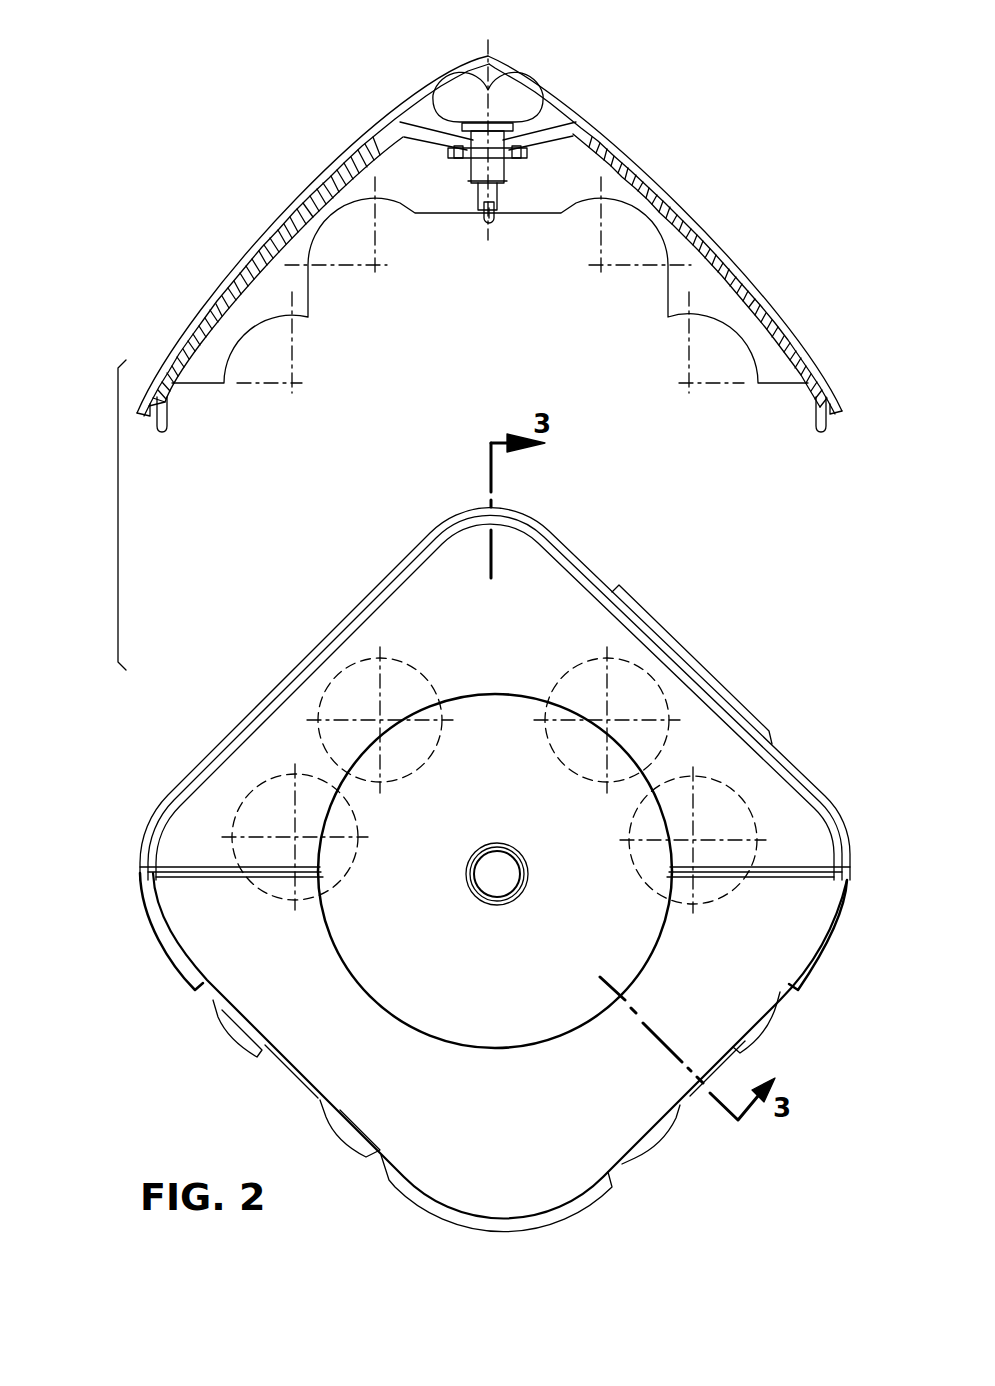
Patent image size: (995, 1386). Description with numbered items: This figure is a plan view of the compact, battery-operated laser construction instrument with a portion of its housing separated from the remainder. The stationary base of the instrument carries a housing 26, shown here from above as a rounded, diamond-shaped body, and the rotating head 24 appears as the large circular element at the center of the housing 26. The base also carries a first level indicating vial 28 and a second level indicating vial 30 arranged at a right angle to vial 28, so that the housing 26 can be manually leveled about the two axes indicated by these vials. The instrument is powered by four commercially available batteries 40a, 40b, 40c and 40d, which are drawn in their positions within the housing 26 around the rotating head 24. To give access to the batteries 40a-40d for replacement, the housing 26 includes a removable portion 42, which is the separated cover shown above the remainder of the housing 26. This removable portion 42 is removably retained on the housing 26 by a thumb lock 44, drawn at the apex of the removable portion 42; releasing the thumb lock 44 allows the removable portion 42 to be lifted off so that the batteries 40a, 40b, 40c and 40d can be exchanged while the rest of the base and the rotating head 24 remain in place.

The rotating head 24 is at (540, 1050).
The housing 26 is at (167, 960).
The first level indicating vial 28 is at (682, 1107).
The second level indicating vial 30 is at (283, 1077).
The battery 40a is at (247, 795).
The battery 40b is at (333, 673).
The battery 40c is at (647, 673).
The battery 40d is at (747, 805).
The removable portion 42 is at (663, 182).
The thumb lock 44 is at (500, 77).